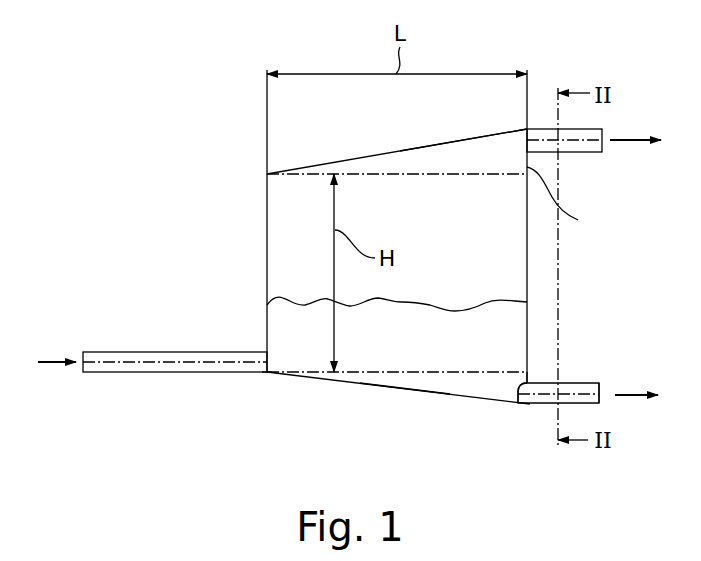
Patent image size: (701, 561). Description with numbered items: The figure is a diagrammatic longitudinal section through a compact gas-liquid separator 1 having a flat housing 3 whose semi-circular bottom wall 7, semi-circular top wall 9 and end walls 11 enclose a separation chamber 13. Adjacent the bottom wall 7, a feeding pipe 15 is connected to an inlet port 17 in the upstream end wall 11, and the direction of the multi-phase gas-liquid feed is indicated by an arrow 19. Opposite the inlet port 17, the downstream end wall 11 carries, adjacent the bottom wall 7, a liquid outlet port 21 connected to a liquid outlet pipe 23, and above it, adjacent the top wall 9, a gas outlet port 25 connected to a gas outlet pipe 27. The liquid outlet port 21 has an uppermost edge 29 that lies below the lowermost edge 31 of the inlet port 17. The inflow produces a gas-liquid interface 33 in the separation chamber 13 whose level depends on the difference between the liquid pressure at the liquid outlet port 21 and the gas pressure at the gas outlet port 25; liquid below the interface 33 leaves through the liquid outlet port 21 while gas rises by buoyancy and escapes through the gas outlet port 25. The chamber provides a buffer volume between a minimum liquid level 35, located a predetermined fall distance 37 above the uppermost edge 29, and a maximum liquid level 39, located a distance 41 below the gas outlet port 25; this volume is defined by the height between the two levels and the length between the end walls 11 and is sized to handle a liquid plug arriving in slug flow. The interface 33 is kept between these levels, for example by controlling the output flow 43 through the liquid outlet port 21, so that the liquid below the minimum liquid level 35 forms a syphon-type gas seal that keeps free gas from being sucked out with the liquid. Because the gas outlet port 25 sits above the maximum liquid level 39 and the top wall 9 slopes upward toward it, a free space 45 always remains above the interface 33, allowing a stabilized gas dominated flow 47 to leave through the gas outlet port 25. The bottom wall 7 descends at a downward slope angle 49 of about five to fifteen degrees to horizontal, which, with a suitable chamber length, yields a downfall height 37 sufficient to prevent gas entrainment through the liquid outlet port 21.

The gas-liquid separator 1 is at (198, 190).
The housing 3 is at (405, 263).
The bottom wall 7 is at (437, 396).
The top wall 9 is at (375, 153).
The end walls 11 is at (266, 258).
The separation chamber 13 is at (286, 273).
The feeding pipe 15 is at (118, 374).
The inlet port 17 is at (265, 377).
The arrow 19 is at (48, 358).
The liquid outlet port 21 is at (528, 405).
The liquid outlet pipe 23 is at (600, 382).
The gas outlet port 25 is at (527, 142).
The gas outlet pipe 27 is at (592, 153).
The uppermost edge 29 is at (520, 396).
The lowermost edge 31 is at (272, 368).
The gas-liquid interface 33 is at (428, 300).
The minimum liquid level 35 is at (383, 369).
The fall distance 37 is at (530, 379).
The maximum liquid level 39 is at (447, 178).
The distance 41 is at (565, 201).
The output flow 43 is at (640, 404).
The free space 45 is at (428, 157).
The gas dominated flow 47 is at (642, 134).
The downward slope angle 49 is at (386, 382).